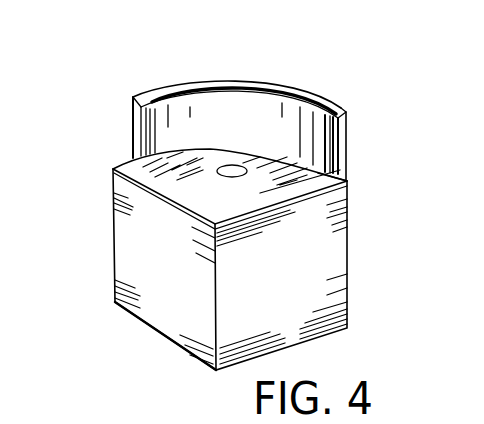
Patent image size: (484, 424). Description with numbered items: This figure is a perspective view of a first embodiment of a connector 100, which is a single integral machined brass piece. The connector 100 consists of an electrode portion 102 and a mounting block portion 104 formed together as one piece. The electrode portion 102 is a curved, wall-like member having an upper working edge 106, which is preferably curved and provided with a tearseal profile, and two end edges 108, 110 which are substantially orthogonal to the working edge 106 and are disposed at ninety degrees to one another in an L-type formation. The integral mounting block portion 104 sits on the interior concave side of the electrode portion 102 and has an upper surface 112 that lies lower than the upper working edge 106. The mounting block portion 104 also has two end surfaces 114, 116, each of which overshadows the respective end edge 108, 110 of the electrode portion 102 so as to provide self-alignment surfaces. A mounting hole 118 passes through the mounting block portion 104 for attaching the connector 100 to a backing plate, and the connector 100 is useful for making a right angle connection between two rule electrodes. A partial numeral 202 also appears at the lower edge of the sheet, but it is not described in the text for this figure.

The connector 100 is at (155, 364).
The electrode portion 102 is at (188, 122).
The mounting block portion 104 is at (302, 290).
The upper working edge 106 is at (305, 90).
The end edge 108 is at (133, 137).
The end edge 110 is at (340, 150).
The upper surface 112 is at (343, 175).
The end surface 114 is at (115, 250).
The end surface 116 is at (348, 268).
The mounting hole 118 is at (240, 168).
The adjacent figure element 202 is at (443, 411).